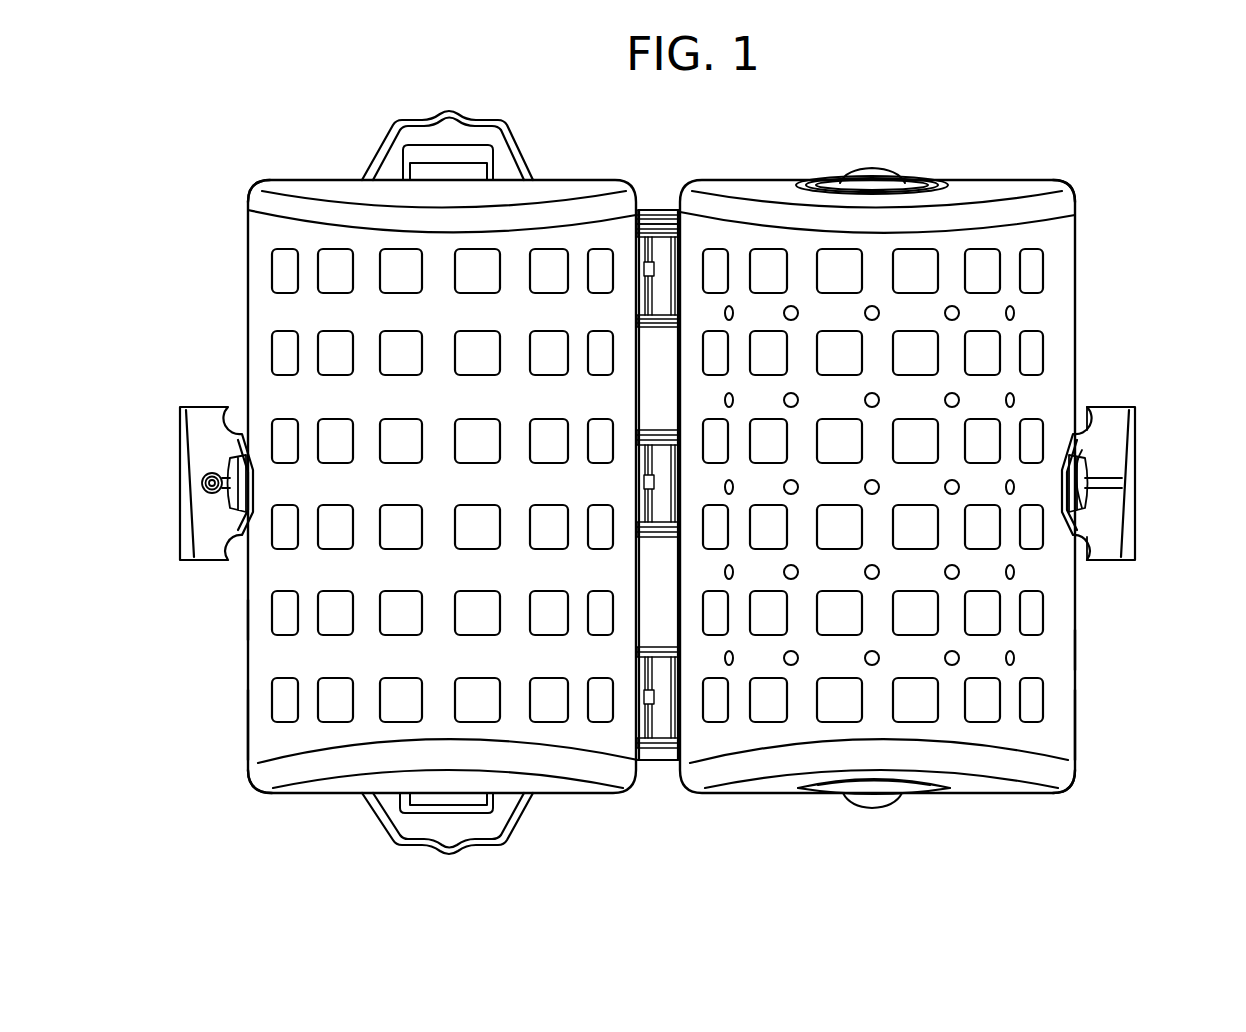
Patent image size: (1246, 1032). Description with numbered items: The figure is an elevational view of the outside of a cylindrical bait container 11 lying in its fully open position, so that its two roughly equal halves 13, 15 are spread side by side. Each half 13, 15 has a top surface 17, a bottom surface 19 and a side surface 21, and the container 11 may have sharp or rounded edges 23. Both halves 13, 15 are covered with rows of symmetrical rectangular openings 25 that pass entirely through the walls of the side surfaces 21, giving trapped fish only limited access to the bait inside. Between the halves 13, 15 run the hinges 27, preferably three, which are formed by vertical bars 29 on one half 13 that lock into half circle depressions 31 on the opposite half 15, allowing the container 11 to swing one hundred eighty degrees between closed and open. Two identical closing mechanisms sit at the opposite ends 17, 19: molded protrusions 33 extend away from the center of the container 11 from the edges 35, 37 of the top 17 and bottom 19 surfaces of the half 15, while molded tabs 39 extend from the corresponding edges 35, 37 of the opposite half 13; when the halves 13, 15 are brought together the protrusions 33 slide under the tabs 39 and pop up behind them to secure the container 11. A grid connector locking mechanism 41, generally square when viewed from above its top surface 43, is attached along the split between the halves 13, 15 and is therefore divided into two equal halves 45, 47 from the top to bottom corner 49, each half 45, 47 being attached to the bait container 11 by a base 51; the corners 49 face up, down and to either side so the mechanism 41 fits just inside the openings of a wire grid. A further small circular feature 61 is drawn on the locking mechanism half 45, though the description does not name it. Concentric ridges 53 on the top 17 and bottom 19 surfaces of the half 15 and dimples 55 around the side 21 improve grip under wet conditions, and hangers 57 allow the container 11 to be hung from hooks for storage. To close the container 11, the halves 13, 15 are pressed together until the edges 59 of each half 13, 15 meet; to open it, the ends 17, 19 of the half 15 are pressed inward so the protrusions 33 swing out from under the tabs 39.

The bait container 11 is at (195, 208).
The half 13 is at (235, 660).
The half 15 is at (1090, 340).
The top surface 17 is at (330, 185).
The bottom surface 19 is at (322, 782).
The side surface 21 is at (262, 706).
The edges 23 is at (262, 192).
The openings 25 is at (402, 278).
The hinges 27 is at (672, 770).
The vertical bars 29 is at (659, 260).
The half circle depressions 31 is at (649, 268).
The molded protrusions 33 is at (893, 175).
The edge 35 is at (342, 182).
The edge 37 is at (338, 795).
The molded tabs 39 is at (457, 168).
The grid connector locking mechanism 41 is at (653, 471).
The top surface 43 is at (185, 489).
The half 45 is at (200, 540).
The half 47 is at (1120, 425).
The corners 49 is at (1120, 490).
The base 51 is at (245, 458).
The concentric ridges 53 is at (915, 178).
The dimples 55 is at (960, 312).
The hangers 57 is at (465, 118).
The edges 59 is at (250, 620).
The pivot 61 is at (202, 480).